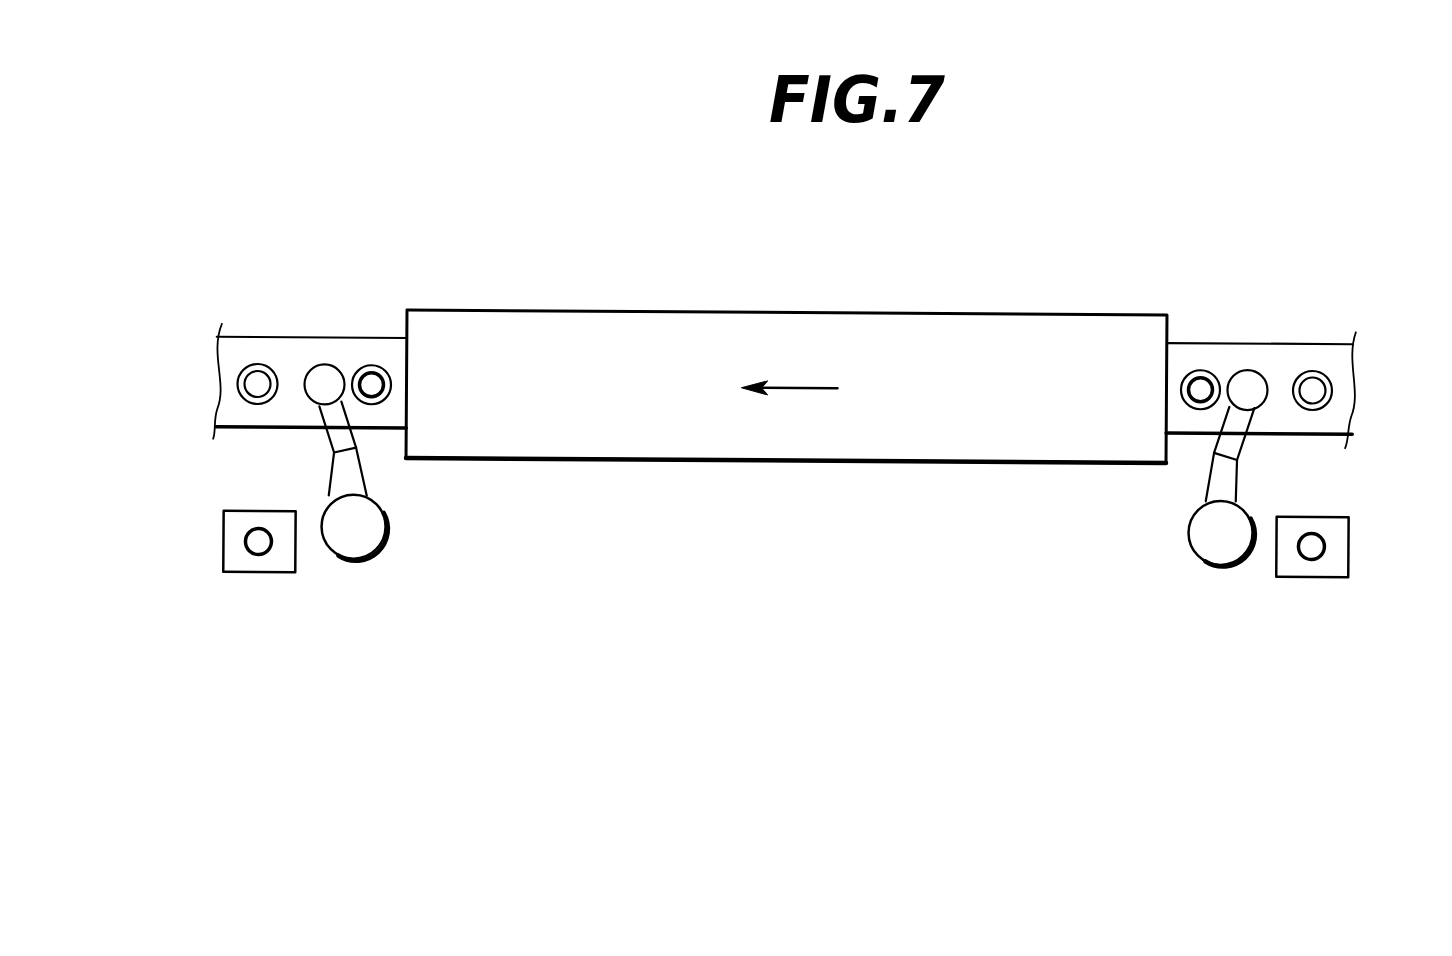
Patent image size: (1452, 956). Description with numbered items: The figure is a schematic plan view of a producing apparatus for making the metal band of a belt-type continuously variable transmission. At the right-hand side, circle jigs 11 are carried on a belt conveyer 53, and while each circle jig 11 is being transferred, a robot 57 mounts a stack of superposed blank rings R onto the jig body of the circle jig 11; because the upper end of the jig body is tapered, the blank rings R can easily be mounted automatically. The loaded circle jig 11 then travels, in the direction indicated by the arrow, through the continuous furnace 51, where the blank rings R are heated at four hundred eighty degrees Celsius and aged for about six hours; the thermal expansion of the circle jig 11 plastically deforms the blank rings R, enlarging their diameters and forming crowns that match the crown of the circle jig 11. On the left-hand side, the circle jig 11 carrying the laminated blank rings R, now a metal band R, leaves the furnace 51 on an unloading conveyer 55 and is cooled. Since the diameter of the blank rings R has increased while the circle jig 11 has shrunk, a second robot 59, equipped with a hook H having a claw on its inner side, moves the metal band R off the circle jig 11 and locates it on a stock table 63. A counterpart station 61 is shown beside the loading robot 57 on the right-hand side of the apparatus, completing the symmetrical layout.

The circle jig 11 is at (260, 365).
The hook H is at (325, 363).
The blank rings R is at (382, 363).
The continuous furnace 51 is at (733, 452).
The belt conveyer 53 is at (1198, 428).
The unloading conveyer 55 is at (375, 430).
The robot 57 is at (1249, 570).
The robot 59 is at (370, 568).
The right mark sensor 61 is at (1342, 565).
The stock table 63 is at (287, 560).